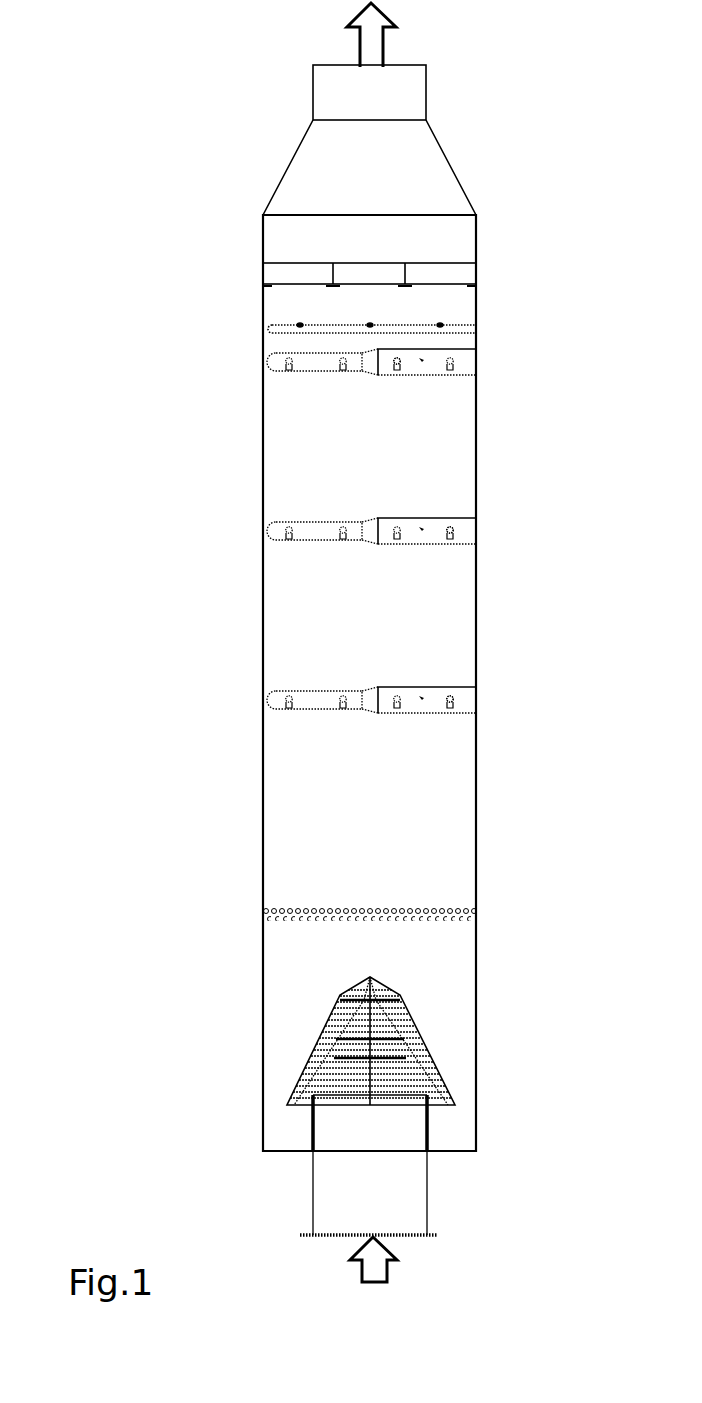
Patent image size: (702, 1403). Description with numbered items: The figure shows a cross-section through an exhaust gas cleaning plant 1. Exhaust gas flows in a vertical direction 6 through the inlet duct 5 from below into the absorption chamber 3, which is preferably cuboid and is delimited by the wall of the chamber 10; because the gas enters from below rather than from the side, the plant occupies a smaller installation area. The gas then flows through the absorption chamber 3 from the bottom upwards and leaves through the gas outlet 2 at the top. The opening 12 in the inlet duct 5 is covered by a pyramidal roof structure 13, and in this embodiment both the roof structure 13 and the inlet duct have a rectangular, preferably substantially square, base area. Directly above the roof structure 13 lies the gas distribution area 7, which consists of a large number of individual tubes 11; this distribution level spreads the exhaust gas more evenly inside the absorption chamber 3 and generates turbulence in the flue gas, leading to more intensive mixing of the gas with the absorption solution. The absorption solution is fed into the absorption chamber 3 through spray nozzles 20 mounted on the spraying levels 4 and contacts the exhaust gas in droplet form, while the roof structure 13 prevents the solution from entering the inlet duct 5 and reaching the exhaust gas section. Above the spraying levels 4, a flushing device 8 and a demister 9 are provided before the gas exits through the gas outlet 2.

The exhaust gas cleaning plant 1 is at (172, 96).
The gas outlet 2 is at (383, 43).
The absorption chamber 3 is at (344, 470).
The spraying levels 4 is at (425, 363).
The inlet duct 5 is at (423, 1182).
The vertical direction 6 is at (400, 1260).
The gas distribution area 7 is at (385, 913).
The flushing device 8 is at (385, 330).
The demister 9 is at (385, 270).
The wall of the chamber 10 is at (262, 611).
The individual tubes 11 is at (445, 908).
The opening 12 is at (380, 1105).
The pyramidal roof structure 13 is at (285, 1031).
The spray nozzles 20 is at (399, 363).